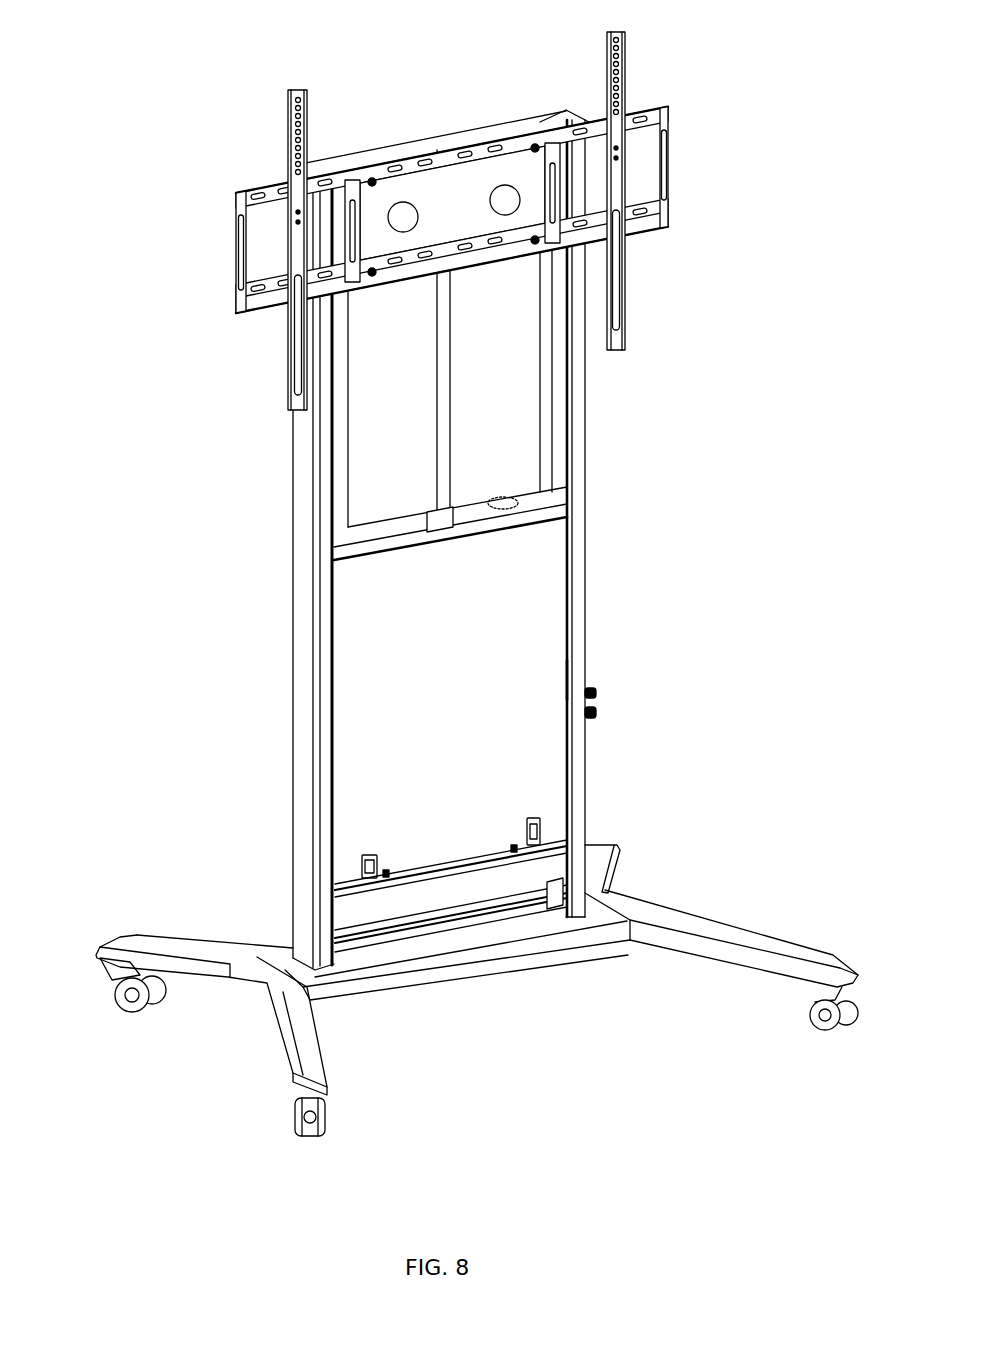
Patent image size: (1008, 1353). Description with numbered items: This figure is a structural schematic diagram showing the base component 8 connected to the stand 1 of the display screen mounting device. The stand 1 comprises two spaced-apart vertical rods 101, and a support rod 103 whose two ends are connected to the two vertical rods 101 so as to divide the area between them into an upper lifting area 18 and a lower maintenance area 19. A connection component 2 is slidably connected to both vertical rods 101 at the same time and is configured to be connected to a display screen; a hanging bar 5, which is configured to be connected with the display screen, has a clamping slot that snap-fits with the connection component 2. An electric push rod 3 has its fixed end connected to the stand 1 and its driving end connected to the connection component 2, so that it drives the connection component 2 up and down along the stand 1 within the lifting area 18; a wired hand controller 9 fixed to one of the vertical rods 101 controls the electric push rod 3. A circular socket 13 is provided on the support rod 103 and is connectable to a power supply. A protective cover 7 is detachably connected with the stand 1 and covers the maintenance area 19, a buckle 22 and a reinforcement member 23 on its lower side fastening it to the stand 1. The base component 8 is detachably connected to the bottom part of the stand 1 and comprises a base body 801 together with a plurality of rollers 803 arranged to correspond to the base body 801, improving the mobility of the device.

The stand 1 is at (332, 947).
The connection component 2 is at (540, 130).
The electric push rod 3 is at (437, 430).
The hanging bar 5 is at (288, 132).
The protective cover 7 is at (570, 678).
The base component 8 is at (634, 940).
The wired hand controller 9 is at (596, 708).
The circular socket 13 is at (556, 513).
The lifting area 18 is at (497, 352).
The maintenance area 19 is at (490, 780).
The buckle 22 is at (540, 826).
The reinforcement member 23 is at (388, 877).
The vertical rods 101 is at (578, 467).
The support rod 103 is at (380, 548).
The base body 801 is at (723, 947).
The rollers 803 is at (318, 1120).